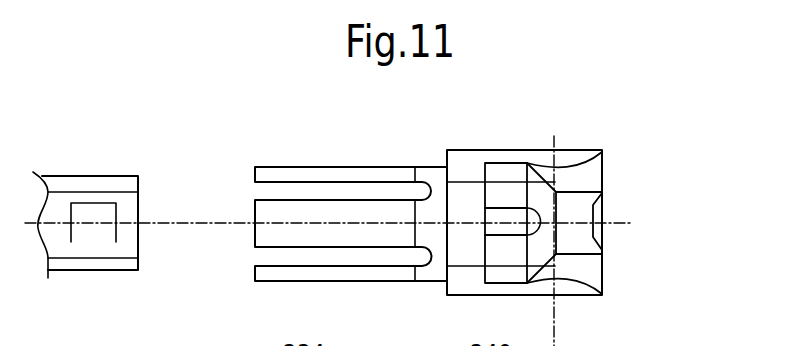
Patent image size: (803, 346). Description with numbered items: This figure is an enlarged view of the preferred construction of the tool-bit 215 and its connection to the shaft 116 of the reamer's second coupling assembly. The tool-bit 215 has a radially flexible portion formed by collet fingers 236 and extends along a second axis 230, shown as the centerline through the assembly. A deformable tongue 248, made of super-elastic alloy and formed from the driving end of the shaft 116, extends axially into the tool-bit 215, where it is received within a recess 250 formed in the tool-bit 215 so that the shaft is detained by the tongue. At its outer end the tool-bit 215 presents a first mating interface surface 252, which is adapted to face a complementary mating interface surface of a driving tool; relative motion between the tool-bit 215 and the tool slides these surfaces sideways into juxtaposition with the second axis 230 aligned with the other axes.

The shaft 116 is at (70, 175).
The tongue 248 is at (93, 222).
The collet fingers 236 is at (317, 197).
The recess 250 is at (507, 202).
The tool-bit 215 is at (573, 137).
The second axis 230 is at (632, 218).
The first mating interface surface 252 is at (603, 264).